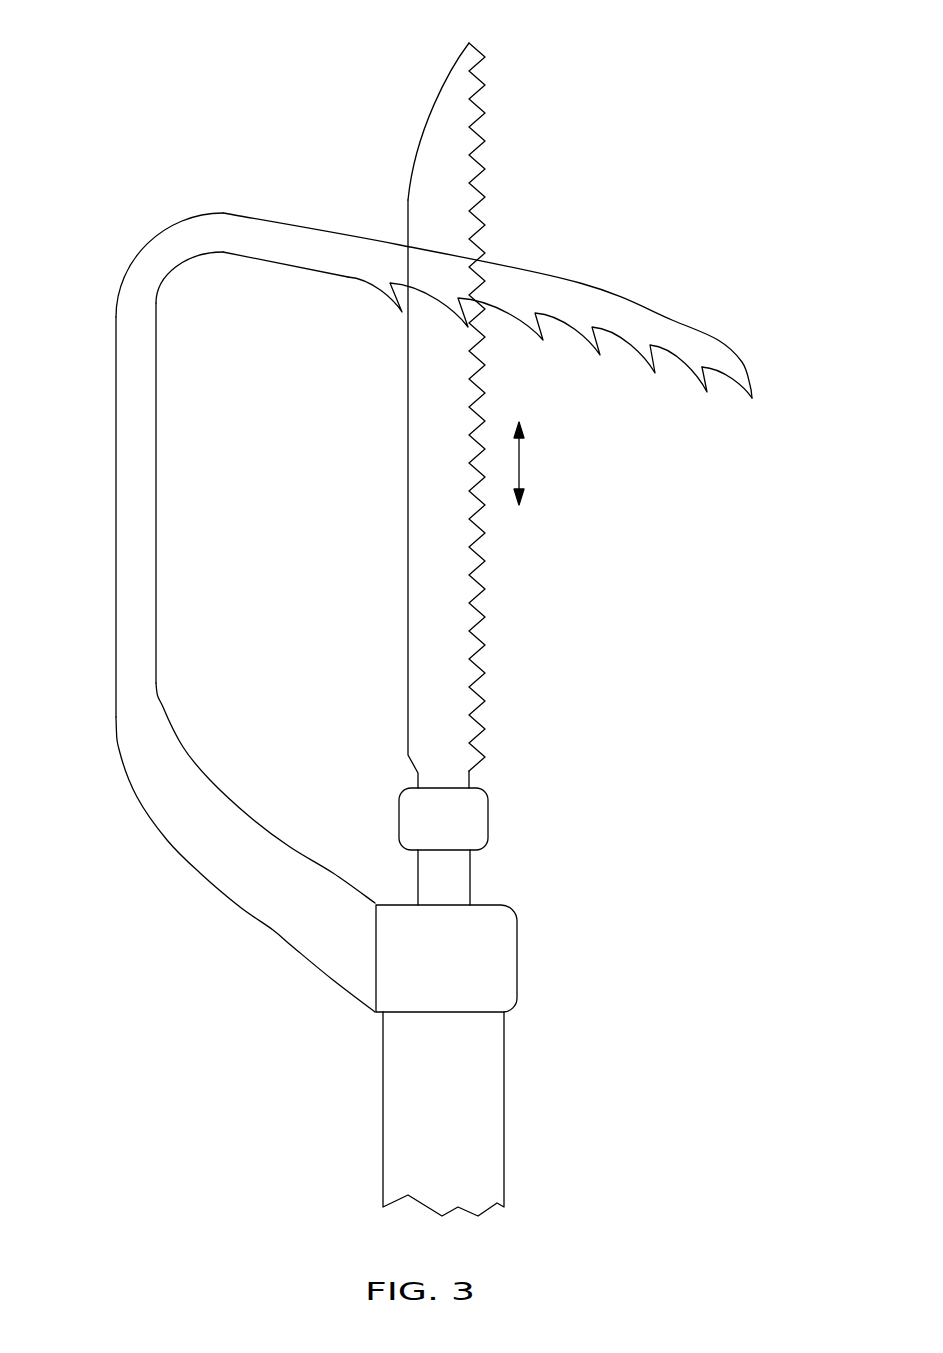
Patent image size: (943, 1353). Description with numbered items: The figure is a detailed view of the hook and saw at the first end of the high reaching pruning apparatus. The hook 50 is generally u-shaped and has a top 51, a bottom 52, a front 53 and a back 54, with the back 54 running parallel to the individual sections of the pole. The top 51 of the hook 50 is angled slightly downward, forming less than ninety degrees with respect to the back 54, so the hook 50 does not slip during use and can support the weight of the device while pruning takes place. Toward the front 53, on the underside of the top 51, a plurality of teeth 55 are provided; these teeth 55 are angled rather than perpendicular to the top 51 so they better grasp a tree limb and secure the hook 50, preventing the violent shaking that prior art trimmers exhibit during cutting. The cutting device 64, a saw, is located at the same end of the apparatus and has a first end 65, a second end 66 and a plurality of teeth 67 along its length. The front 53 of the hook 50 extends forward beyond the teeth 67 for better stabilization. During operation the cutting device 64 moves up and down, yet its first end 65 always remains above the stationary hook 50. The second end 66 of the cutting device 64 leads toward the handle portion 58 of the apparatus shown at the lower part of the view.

The hook 50 is at (437, 594).
The top 51 is at (243, 213).
The bottom 52 is at (293, 948).
The front 53 is at (745, 362).
The back 54 is at (113, 318).
The teeth 55 is at (596, 335).
The handle 58 is at (493, 1110).
The cutting device 64 is at (451, 395).
The first end 65 is at (469, 43).
The second end 66 is at (463, 782).
The teeth 67 is at (473, 605).